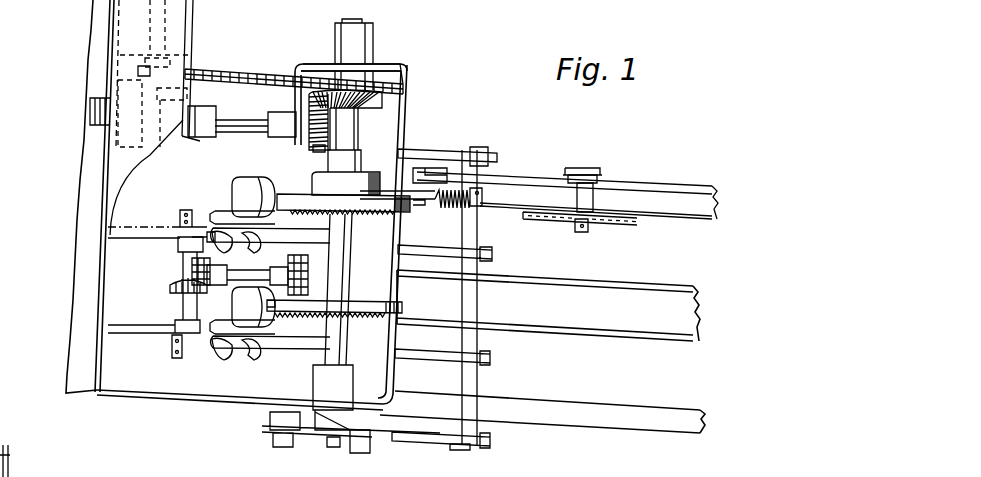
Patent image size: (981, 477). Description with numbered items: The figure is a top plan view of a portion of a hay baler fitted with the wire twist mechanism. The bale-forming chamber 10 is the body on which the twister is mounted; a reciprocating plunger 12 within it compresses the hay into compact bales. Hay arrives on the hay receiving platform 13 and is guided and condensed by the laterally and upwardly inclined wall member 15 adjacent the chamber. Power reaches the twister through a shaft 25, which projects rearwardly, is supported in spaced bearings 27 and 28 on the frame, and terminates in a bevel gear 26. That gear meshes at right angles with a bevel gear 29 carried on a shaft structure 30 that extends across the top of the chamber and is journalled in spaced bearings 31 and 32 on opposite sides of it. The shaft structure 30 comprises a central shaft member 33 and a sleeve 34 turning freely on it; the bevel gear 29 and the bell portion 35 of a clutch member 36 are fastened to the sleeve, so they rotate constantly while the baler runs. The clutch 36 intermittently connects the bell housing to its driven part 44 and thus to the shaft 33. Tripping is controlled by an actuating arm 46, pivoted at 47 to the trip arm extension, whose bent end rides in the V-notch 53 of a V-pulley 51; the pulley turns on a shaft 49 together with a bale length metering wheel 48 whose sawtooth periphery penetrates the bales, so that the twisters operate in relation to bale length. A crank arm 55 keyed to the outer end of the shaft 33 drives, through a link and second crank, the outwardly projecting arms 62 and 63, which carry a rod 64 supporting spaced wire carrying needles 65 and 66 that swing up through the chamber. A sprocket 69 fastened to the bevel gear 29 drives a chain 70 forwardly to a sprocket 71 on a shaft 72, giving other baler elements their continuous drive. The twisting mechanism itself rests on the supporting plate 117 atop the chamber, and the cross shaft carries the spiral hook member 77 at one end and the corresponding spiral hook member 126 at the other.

The bale-forming chamber 10 is at (641, 434).
The reciprocating plunger 12 is at (108, 469).
The hay receiving platform 13 is at (68, 469).
The inclined wall member 15 is at (20, 461).
The shaft 25 is at (248, 133).
The bevel gear 26 is at (310, 149).
The bearing 27 is at (200, 138).
The bearing 28 is at (278, 112).
The bevel gear 29 is at (383, 100).
The shaft structure 30 is at (353, 119).
The bearing 31 is at (374, 42).
The bearing 32 is at (318, 380).
The shaft member 33 is at (337, 20).
The sleeve 34 is at (362, 136).
The bell portion 35 is at (366, 172).
The clutch member 36 is at (305, 185).
The driven part 44 is at (357, 202).
The actuating arm 46 is at (533, 172).
The pivot 47 is at (445, 170).
The bale length metering wheel 48 is at (615, 231).
The shaft 49 is at (596, 197).
The V-pulley 51 is at (601, 169).
The V-notch 53 is at (602, 182).
The crank arm 55 is at (337, 442).
The outwardly projecting arm 62 is at (417, 446).
The outwardly projecting arm 63 is at (462, 150).
The rod 64 is at (478, 377).
The wire carrying needle 65 is at (421, 359).
The wire carrying needle 66 is at (434, 246).
The sprocket 69 is at (406, 86).
The chain 70 is at (218, 69).
The sprocket 71 is at (190, 70).
The shaft 72 is at (185, 22).
The spiral hook member 77 is at (195, 349).
The supporting plate 117 is at (110, 363).
The spiral hook member 126 is at (203, 220).